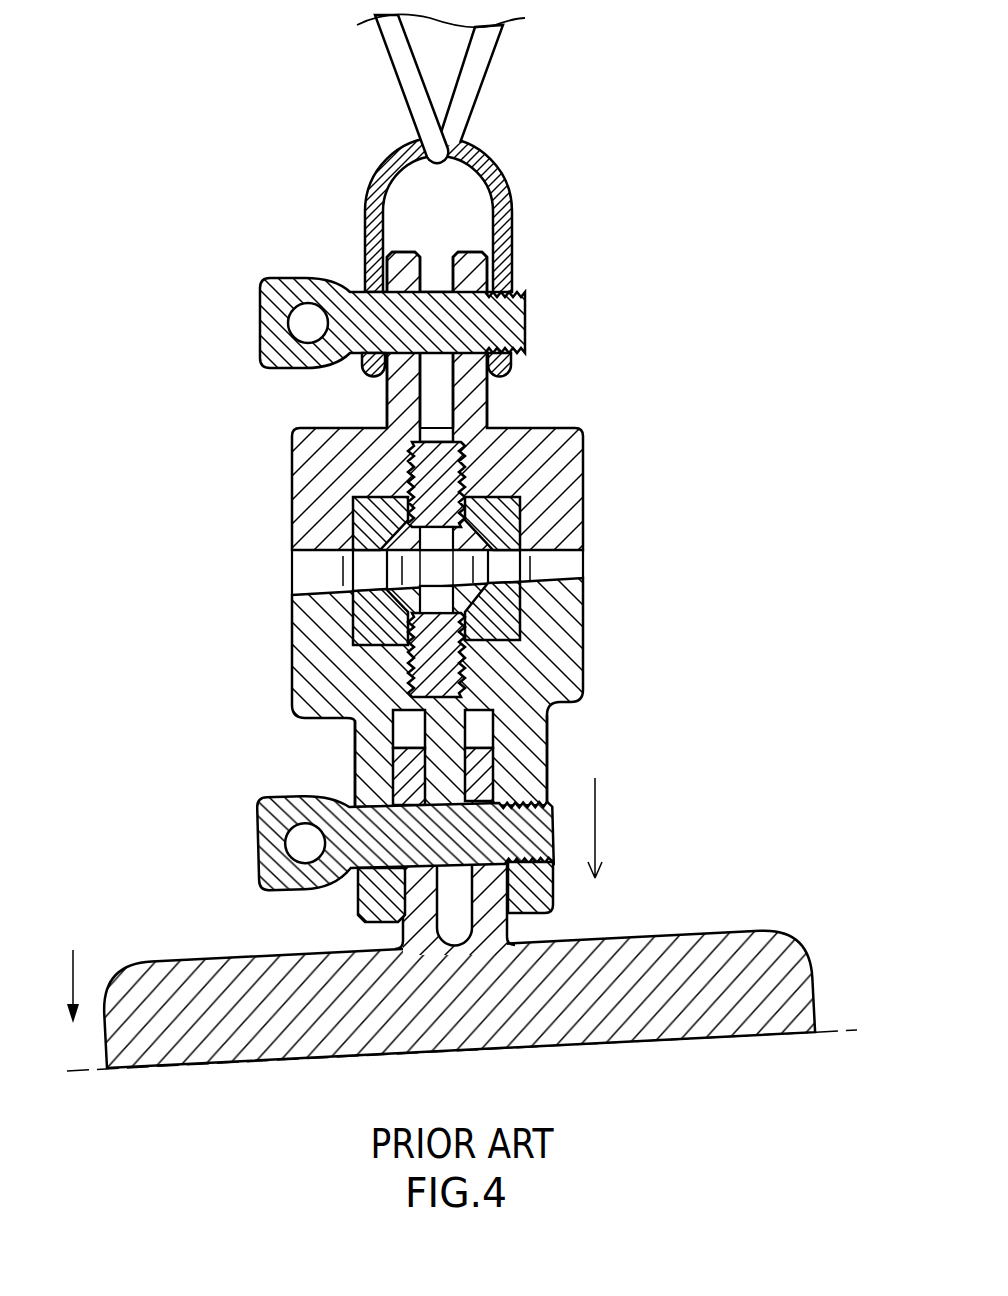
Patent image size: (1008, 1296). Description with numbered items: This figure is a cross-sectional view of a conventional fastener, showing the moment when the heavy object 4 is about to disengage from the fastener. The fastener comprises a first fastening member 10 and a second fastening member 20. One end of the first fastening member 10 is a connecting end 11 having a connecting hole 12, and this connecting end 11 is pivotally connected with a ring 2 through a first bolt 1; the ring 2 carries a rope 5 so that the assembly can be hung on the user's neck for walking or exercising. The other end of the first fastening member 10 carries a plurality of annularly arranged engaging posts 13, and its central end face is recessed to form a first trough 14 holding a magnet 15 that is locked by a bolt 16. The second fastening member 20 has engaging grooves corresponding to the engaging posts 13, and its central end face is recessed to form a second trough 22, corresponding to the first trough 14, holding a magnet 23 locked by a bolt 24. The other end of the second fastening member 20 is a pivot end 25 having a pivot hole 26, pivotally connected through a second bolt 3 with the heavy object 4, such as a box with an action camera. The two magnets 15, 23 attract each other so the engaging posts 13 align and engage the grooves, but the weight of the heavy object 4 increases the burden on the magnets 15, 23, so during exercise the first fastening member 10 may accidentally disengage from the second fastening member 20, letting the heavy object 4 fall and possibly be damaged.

The first bolt 1 is at (282, 292).
The ring 2 is at (382, 180).
The second bolt 3 is at (262, 845).
The heavy object 4 is at (660, 955).
The rope 5 is at (465, 95).
The first fastening member 10 is at (292, 502).
The connecting end 11 is at (487, 408).
The connecting hole 12 is at (365, 262).
The engaging posts 13 is at (300, 573).
The first trough 14 is at (385, 500).
The magnet 15 is at (500, 530).
The bolt 16 is at (468, 472).
The second fastening member 20 is at (292, 670).
The second trough 22 is at (355, 612).
The magnet 23 is at (497, 617).
The bolt 24 is at (447, 658).
The pivot end 25 is at (350, 744).
The pivot hole 26 is at (362, 893).